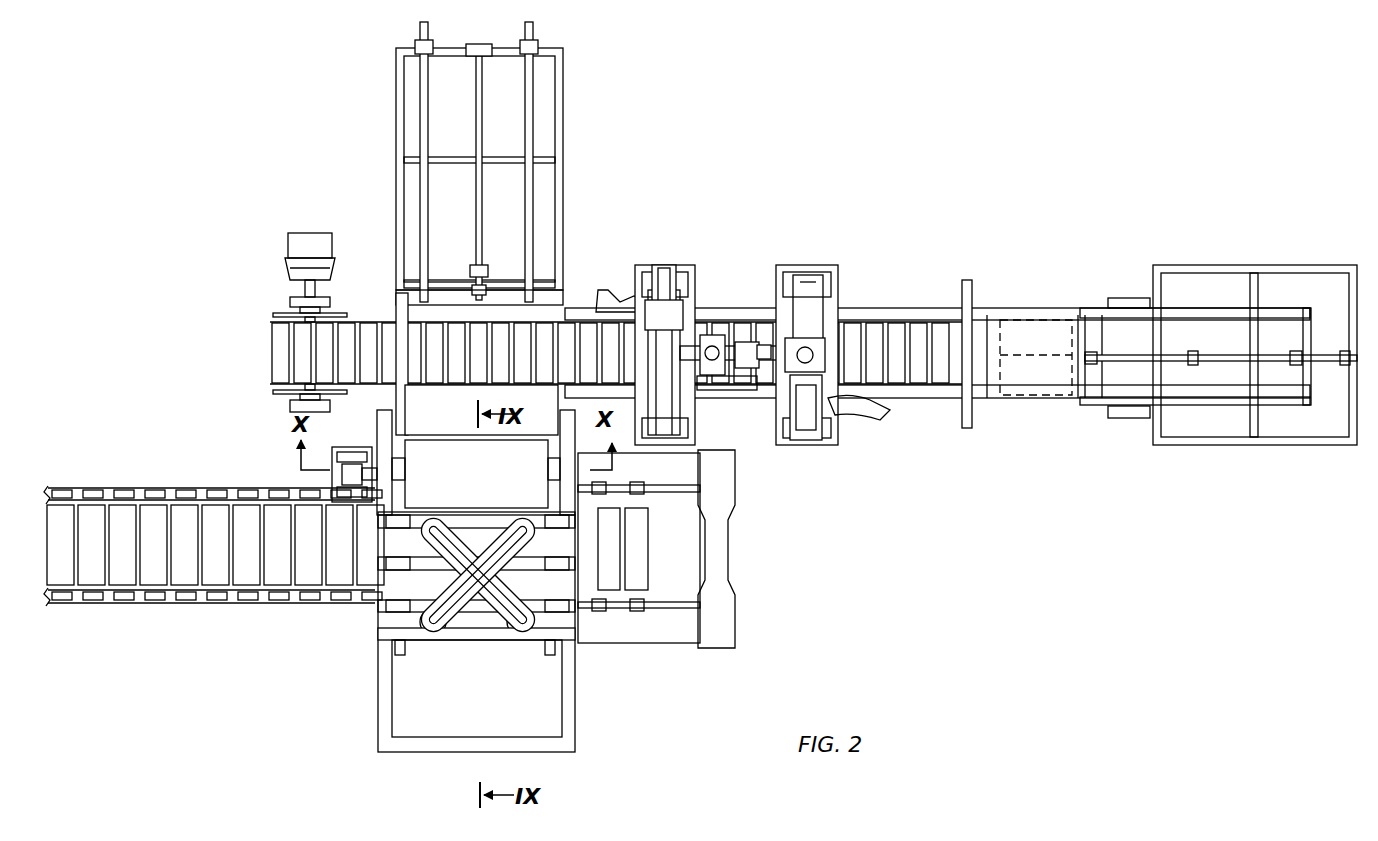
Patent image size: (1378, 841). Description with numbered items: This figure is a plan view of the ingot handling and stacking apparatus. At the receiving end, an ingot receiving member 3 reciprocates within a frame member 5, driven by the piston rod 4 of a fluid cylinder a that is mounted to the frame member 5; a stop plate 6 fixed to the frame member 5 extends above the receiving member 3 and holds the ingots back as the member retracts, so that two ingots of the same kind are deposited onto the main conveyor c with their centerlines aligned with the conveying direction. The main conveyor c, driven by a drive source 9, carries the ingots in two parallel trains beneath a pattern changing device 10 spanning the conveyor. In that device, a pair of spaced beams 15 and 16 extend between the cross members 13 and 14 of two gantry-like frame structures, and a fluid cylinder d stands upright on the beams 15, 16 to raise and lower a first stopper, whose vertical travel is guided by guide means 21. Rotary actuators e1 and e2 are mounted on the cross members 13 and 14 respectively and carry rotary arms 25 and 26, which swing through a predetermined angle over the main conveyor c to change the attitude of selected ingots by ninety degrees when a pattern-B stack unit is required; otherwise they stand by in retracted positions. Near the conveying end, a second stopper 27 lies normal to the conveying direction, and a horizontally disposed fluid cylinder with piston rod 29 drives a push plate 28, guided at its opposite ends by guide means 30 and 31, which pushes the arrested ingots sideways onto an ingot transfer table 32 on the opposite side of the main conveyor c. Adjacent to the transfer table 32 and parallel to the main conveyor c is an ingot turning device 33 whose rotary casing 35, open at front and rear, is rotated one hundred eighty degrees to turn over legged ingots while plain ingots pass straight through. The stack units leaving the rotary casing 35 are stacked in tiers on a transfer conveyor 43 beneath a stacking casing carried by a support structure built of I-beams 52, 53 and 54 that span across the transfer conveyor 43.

The ingot receiving member 3 is at (997, 400).
The piston rod 4 is at (1135, 362).
The frame member 5 is at (1030, 405).
The stop plate 6 is at (1078, 398).
The drive source 9 is at (290, 255).
The pattern changing device 10 is at (762, 226).
The cross member 13 is at (680, 418).
The cross member 14 is at (825, 300).
The beam 15 is at (748, 390).
The beam 16 is at (745, 342).
The guide means 21 is at (714, 335).
The rotary arm 25 is at (608, 292).
The rotary arm 26 is at (875, 420).
The second stopper 27 is at (400, 304).
The push plate 28 is at (555, 300).
The piston rod 29 is at (476, 278).
The guide means 30 is at (530, 225).
The guide means 31 is at (430, 172).
The ingot transfer table 32 is at (416, 405).
The ingot turning device 33 is at (372, 445).
The rotary casing 35 is at (532, 462).
The transfer conveyor 43 is at (292, 602).
The I-beam 52 is at (515, 710).
The I-beam 53 is at (566, 710).
The I-beam 54 is at (383, 708).
The fluid cylinder a is at (1210, 362).
The main conveyor c is at (910, 318).
The fluid cylinder d is at (763, 345).
The rotary actuator e1 is at (672, 300).
The rotary actuator e2 is at (800, 402).